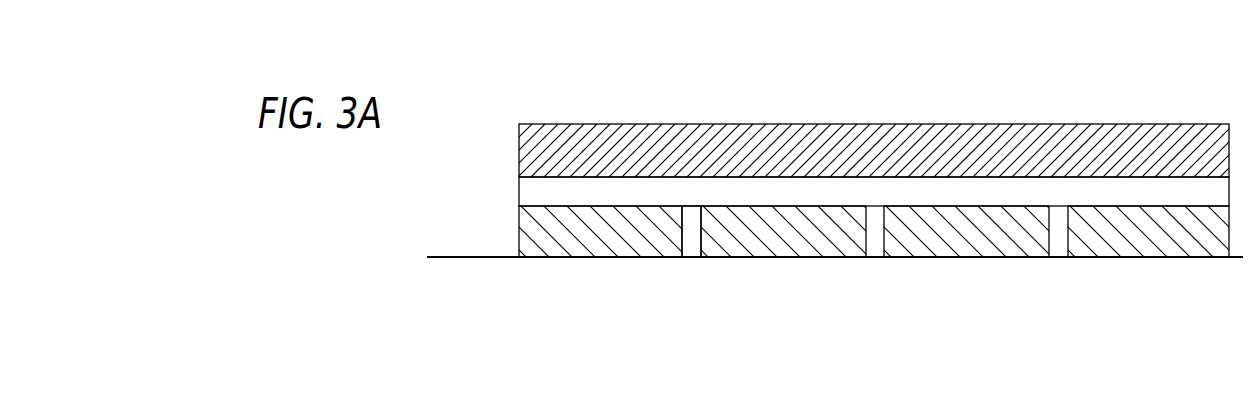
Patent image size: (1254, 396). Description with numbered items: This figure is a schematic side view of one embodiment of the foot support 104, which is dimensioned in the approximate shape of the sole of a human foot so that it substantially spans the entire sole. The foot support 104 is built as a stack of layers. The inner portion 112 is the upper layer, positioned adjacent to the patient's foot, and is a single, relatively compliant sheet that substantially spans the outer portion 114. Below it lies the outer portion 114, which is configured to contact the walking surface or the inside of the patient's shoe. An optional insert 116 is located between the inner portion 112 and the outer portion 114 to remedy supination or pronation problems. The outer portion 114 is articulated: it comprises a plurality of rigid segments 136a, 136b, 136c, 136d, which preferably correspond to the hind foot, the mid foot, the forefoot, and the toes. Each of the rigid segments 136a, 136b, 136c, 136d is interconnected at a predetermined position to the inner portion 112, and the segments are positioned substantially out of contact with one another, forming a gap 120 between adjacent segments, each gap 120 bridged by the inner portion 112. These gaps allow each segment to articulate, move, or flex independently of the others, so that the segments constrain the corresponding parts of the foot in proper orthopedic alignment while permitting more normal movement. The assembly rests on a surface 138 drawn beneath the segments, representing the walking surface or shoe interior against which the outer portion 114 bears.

The foot support 104 is at (824, 119).
The inner portion 112 is at (837, 148).
The outer portion 114 is at (824, 274).
The insert 116 is at (918, 193).
The gap 120 is at (692, 240).
The rigid segment 136a is at (1145, 244).
The rigid segment 136b is at (973, 244).
The rigid segment 136c is at (787, 243).
The rigid segment 136d is at (556, 240).
The base plane / support surface 138 is at (497, 258).